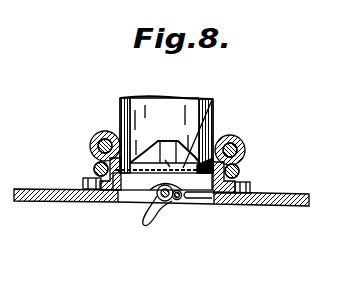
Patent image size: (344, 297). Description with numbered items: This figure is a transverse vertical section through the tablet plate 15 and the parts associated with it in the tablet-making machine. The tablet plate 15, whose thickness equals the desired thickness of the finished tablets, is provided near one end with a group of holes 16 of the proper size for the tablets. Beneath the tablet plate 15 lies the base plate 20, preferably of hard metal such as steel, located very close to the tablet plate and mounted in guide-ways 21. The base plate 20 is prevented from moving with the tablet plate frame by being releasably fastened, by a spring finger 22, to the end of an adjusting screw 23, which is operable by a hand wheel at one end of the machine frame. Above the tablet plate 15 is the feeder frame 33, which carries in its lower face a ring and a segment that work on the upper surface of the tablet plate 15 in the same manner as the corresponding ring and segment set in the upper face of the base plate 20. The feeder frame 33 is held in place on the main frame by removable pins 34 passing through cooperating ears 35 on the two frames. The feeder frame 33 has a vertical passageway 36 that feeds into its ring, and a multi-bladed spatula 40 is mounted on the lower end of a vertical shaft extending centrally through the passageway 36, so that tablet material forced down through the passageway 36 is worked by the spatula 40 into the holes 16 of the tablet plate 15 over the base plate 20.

The tablet plate 15 is at (208, 196).
The holes 16 is at (212, 99).
The base plate 20 is at (142, 177).
The guide-ways 21 is at (83, 183).
The spring finger 22 is at (145, 223).
The adjusting screw 23 is at (171, 201).
The feeder frame 33 is at (173, 94).
The removable pins 34 is at (93, 146).
The ears 35 is at (118, 134).
The vertical passageway 36 is at (152, 153).
The multi-bladed spatula 40 is at (154, 168).